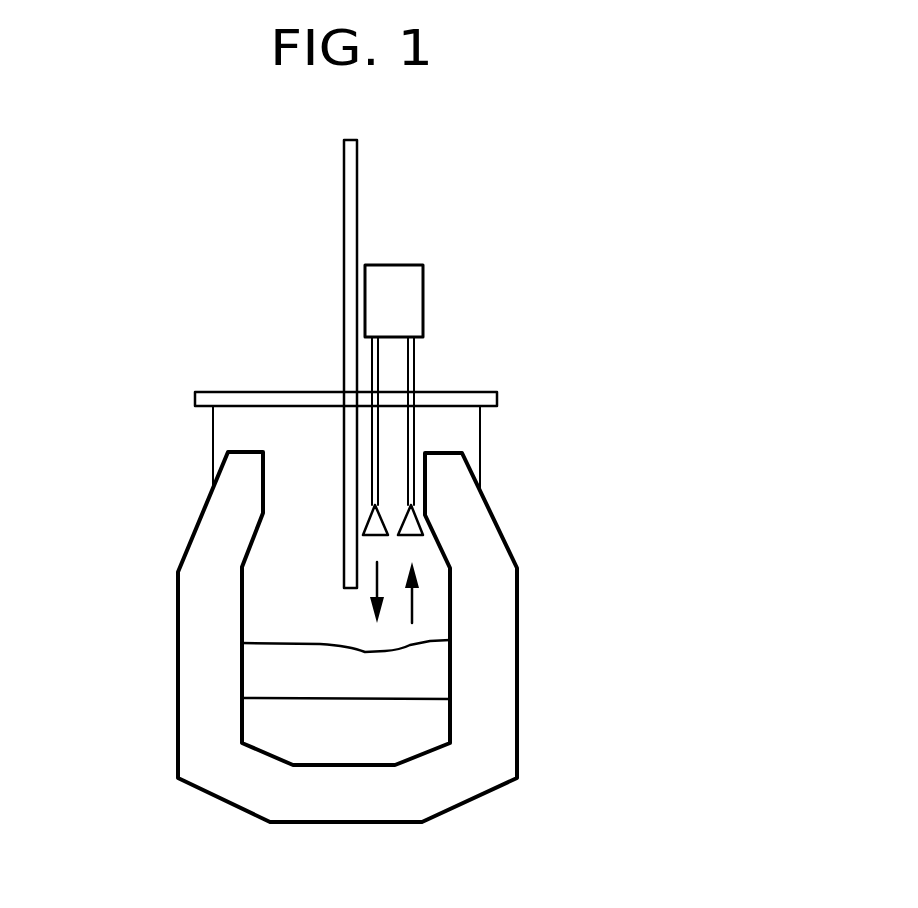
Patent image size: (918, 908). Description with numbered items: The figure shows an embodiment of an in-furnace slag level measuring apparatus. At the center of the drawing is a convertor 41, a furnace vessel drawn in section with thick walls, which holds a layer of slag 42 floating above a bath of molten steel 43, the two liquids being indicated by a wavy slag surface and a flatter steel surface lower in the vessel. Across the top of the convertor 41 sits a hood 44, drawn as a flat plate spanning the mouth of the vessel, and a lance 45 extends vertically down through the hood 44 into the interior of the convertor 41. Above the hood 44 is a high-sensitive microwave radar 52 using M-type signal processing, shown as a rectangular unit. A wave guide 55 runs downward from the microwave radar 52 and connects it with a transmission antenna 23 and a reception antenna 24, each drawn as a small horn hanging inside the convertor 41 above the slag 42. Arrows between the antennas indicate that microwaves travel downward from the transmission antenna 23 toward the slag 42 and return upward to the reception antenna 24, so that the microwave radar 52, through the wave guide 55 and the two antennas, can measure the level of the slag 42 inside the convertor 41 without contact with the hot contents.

The transmission antenna 23 is at (370, 512).
The reception antenna 24 is at (418, 517).
The convertor 41 is at (500, 533).
The slag 42 is at (278, 643).
The molten steel 43 is at (270, 710).
The hood 44 is at (203, 393).
The lance 45 is at (343, 188).
The microwave radar 52 is at (400, 265).
The wave guide 55 is at (408, 368).